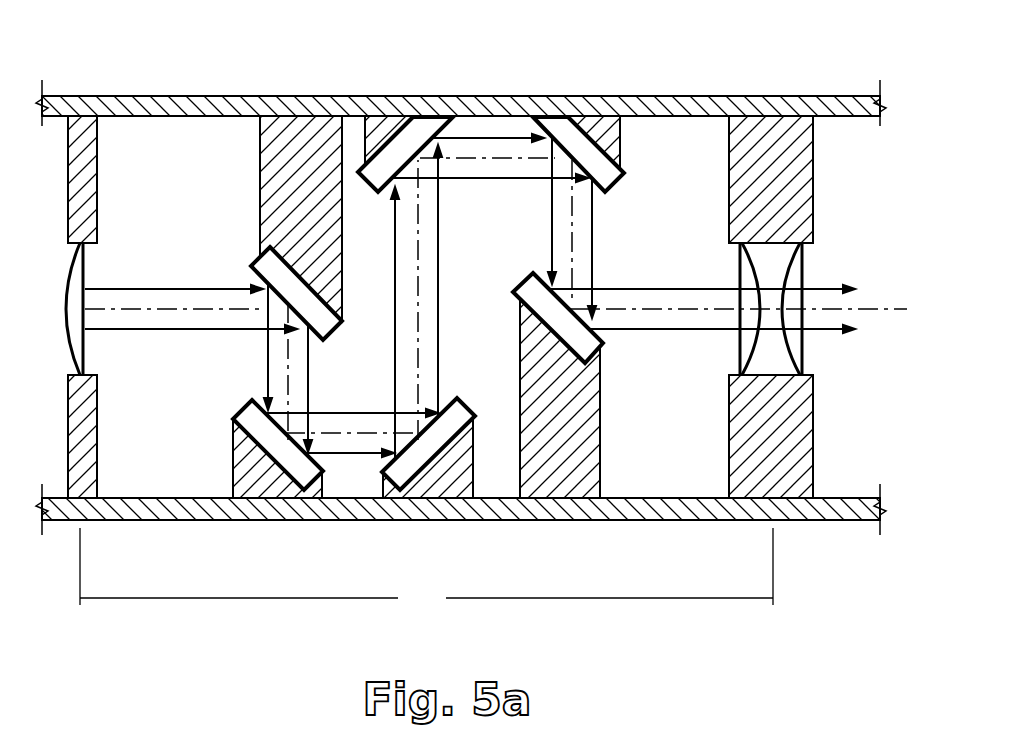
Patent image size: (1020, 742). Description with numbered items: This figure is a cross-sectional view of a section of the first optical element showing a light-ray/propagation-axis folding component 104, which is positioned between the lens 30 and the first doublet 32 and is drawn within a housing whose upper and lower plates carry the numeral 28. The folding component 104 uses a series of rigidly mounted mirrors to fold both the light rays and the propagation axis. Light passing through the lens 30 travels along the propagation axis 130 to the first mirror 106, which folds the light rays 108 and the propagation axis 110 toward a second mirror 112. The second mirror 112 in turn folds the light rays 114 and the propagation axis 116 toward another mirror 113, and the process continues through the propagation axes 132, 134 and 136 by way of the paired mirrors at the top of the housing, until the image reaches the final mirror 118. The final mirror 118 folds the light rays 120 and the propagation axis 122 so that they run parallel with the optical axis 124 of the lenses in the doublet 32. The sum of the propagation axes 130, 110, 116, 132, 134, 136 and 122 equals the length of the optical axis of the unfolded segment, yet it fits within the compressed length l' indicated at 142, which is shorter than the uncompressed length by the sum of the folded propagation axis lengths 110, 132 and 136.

The housing / base plates 28 is at (183, 96).
The lens 30 is at (66, 290).
The first doublet 32 is at (770, 270).
The folding component 104 is at (257, 78).
The first mirror 106 is at (250, 265).
The light rays 108 is at (267, 375).
The propagation axis 110 is at (287, 353).
The second mirror 112 is at (232, 415).
The third folding mirror 113 is at (457, 398).
The light rays 114 is at (353, 455).
The propagation axis 116 is at (355, 437).
The final mirror 118 is at (603, 345).
The light rays 120 is at (653, 330).
The propagation axis 122 is at (705, 308).
The optical axis 124 is at (870, 310).
The propagation axis 130 is at (177, 307).
The propagation axis 132 is at (415, 302).
The propagation axis 134 is at (523, 158).
The propagation axis 136 is at (573, 223).
The compressed length l' 142 is at (427, 612).